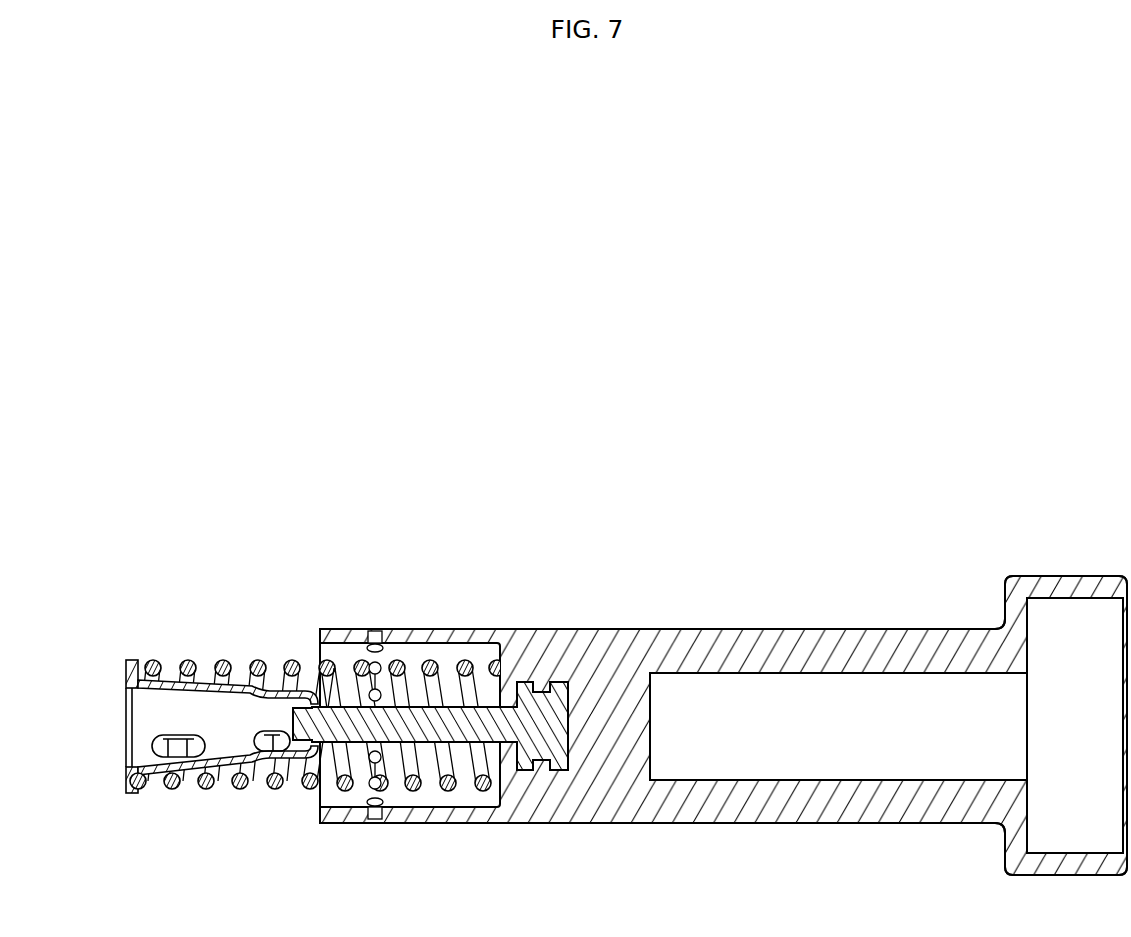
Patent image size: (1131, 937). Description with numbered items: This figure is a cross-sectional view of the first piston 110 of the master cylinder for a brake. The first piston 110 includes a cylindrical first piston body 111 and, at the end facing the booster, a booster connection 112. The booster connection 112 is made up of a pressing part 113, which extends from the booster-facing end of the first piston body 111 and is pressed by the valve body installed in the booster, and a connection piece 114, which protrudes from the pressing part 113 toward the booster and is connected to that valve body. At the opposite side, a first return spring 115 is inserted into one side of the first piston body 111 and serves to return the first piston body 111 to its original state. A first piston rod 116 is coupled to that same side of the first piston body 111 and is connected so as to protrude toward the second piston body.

The first piston 110 is at (111, 554).
The first piston body 111 is at (818, 640).
The booster connection 112 is at (1113, 445).
The pressing part 113 is at (1012, 603).
The connection piece 114 is at (1082, 588).
The first return spring 115 is at (258, 660).
The first piston rod 116 is at (410, 730).